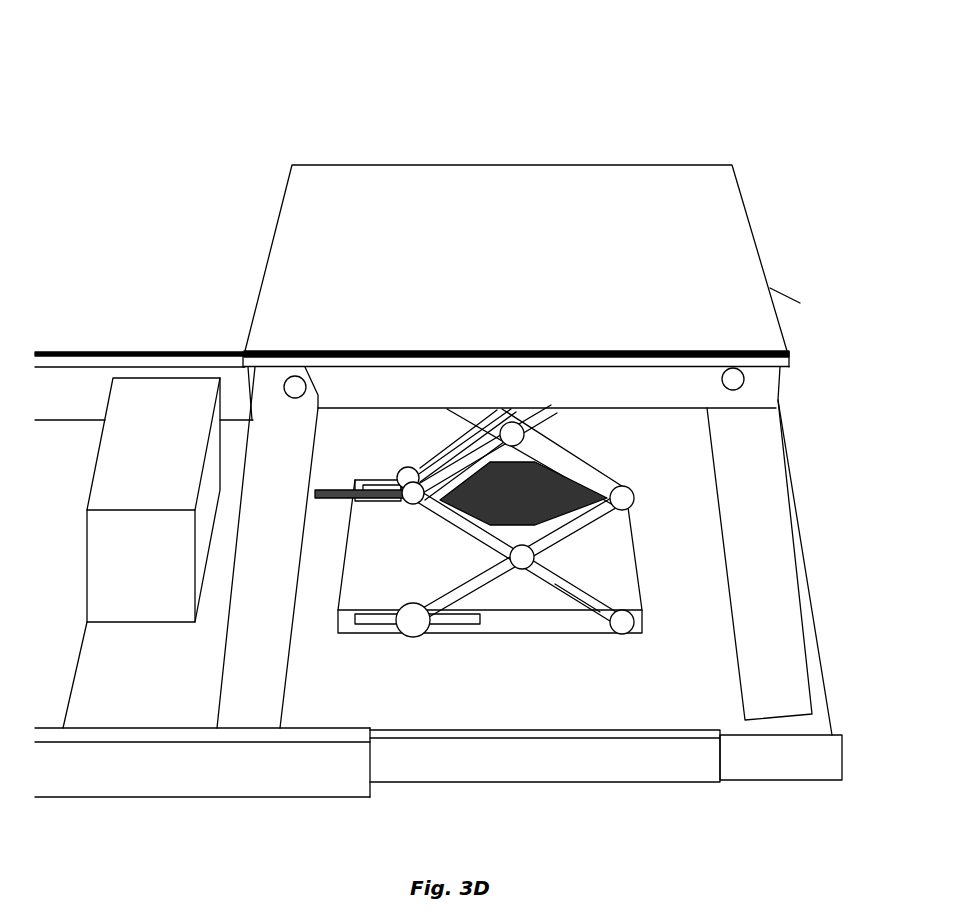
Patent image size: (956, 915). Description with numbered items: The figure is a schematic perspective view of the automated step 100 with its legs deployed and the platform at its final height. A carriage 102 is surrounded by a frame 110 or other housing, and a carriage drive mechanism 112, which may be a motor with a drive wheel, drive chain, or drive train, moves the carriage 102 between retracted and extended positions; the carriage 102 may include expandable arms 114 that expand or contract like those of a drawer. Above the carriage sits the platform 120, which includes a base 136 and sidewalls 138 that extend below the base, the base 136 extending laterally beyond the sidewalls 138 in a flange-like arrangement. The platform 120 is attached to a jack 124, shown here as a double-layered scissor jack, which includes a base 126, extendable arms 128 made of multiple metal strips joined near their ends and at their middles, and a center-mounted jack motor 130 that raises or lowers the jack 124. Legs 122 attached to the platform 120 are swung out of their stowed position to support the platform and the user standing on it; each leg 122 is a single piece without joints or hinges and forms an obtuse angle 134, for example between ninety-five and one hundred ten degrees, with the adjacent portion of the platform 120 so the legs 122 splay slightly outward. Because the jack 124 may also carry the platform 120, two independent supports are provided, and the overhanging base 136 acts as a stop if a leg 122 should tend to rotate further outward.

The automated step 100 is at (764, 94).
The carriage 102 is at (156, 691).
The frame 110 is at (70, 352).
The carriage drive mechanism 112 is at (152, 403).
The expandable arms 114 is at (660, 786).
The platform 120 is at (597, 180).
The legs 122 is at (292, 638).
The jack 124 is at (636, 545).
The base 126 is at (355, 532).
The extendable arms 128 is at (553, 590).
The jack motor 130 is at (630, 508).
The obtuse angle 134 is at (714, 461).
The base 136 is at (770, 288).
The sidewalls 138 is at (512, 394).